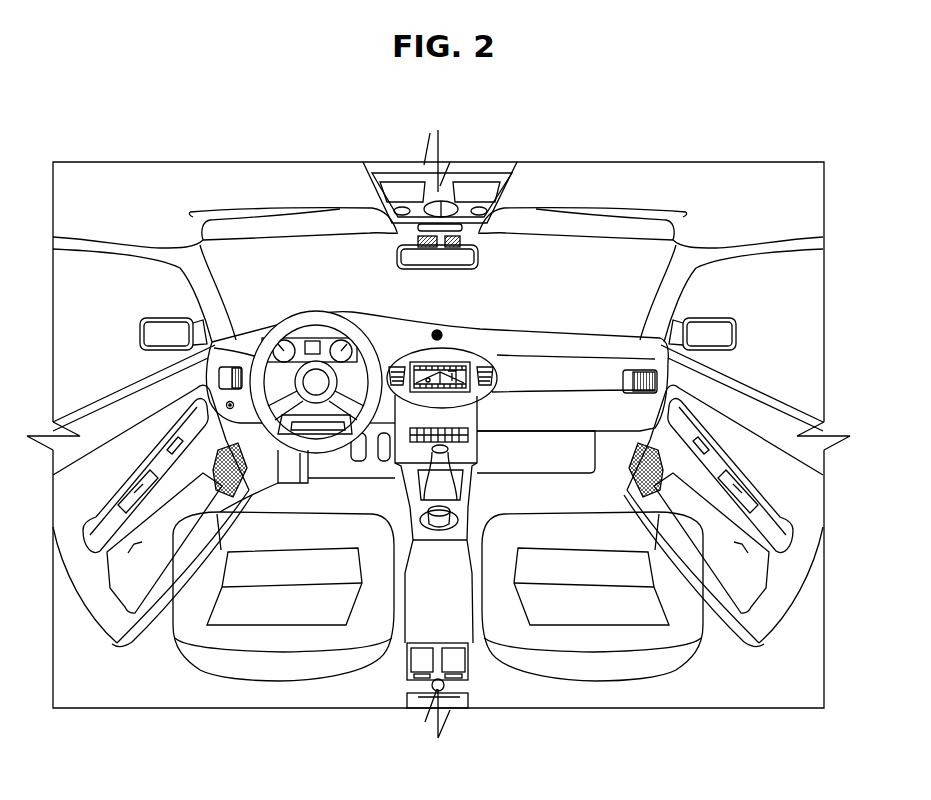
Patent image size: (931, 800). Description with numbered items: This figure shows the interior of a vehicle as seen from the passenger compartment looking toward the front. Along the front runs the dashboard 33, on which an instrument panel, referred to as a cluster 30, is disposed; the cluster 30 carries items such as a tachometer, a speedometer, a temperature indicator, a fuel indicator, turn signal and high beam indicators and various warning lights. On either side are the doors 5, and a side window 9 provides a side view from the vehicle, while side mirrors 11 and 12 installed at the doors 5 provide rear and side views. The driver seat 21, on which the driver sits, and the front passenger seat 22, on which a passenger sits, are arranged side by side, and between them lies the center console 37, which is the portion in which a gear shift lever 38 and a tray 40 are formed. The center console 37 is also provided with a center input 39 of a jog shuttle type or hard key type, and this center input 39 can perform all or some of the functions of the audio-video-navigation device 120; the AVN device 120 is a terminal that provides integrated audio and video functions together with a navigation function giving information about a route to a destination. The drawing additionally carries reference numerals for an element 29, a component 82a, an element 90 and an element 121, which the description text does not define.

The door 5 is at (66, 518).
The side window 9 is at (63, 318).
The side mirror 11 is at (147, 321).
The side mirror 12 is at (719, 321).
The driver seat 21 is at (261, 670).
The front passenger seat 22 is at (584, 665).
The steering wheel 29 is at (300, 328).
The cluster 30 is at (316, 337).
The dashboard 33 is at (594, 337).
The center console 37 is at (472, 433).
The gear shift lever 38 is at (454, 464).
The center input 39 is at (454, 506).
The tray 40 is at (457, 593).
The camera 82a is at (437, 330).
The room mirror 90 is at (456, 238).
The AVN device 120 is at (455, 356).
The center fascia 121 is at (484, 350).